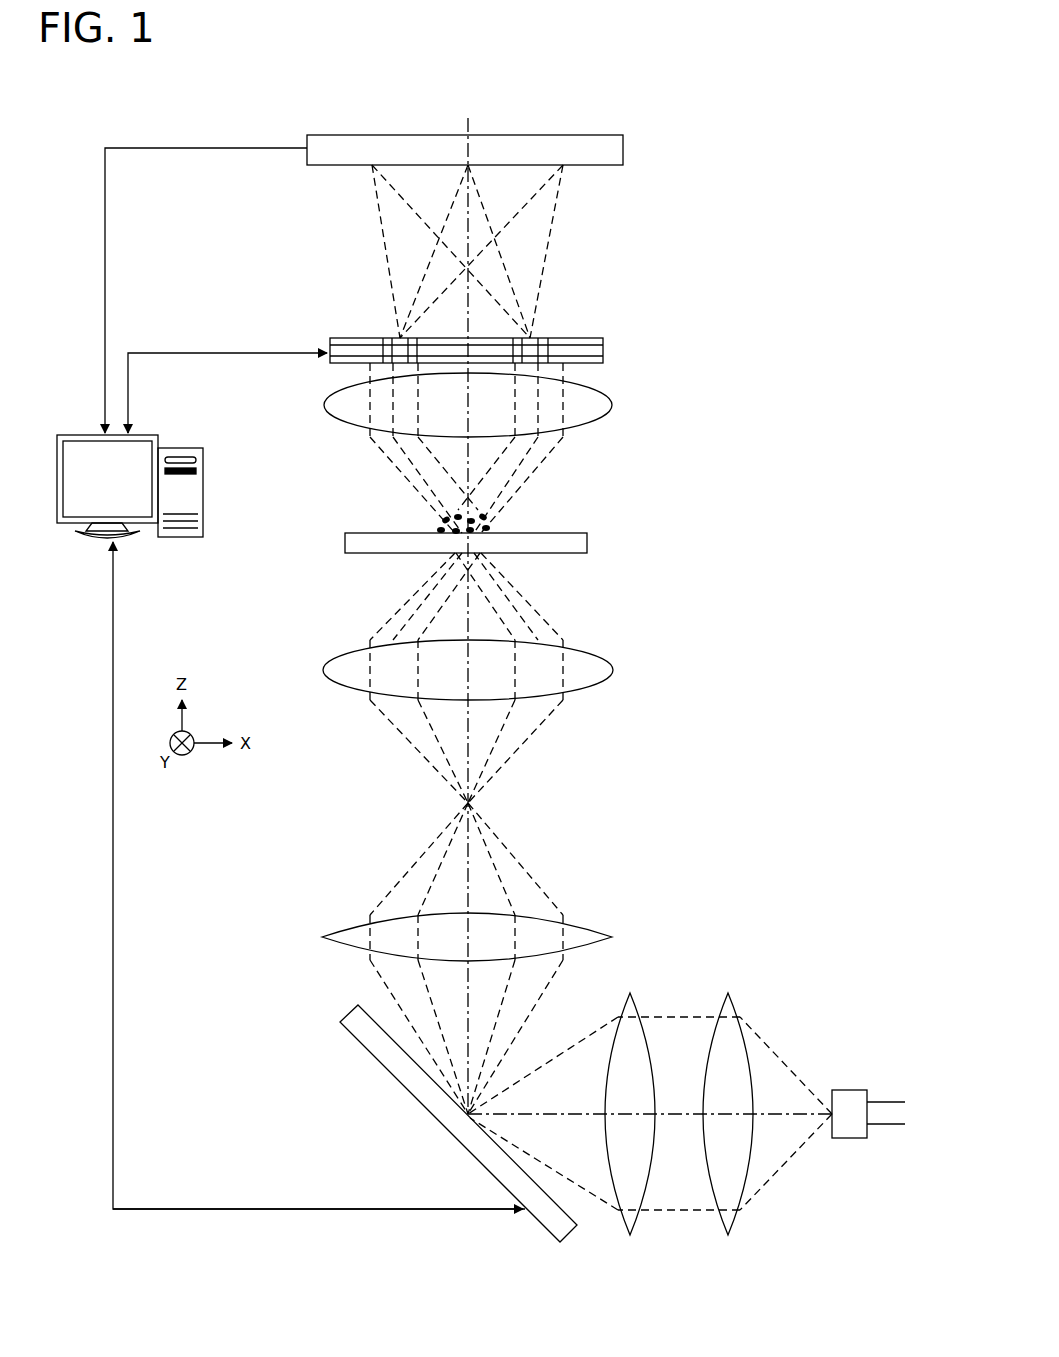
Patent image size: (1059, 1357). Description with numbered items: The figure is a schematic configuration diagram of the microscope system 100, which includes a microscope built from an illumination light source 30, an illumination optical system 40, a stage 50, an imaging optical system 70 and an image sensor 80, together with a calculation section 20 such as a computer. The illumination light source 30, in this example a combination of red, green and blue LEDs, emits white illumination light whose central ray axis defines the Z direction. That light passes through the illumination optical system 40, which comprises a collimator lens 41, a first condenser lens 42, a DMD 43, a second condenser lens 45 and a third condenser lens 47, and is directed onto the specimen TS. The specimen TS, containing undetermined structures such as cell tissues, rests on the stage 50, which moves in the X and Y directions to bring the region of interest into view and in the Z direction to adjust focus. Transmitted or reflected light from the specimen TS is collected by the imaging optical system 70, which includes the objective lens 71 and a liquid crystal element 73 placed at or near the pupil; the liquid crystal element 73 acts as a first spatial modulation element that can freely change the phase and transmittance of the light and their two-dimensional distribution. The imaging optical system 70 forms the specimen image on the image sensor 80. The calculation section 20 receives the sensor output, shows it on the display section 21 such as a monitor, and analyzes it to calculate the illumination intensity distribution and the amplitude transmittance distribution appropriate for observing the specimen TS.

The microscope system 100 is at (232, 107).
The image sensor 80 is at (501, 129).
The imaging optical system 70 is at (533, 373).
The liquid crystal element 73 is at (515, 332).
The objective lens 71 is at (512, 406).
The specimen TS is at (480, 523).
The stage 50 is at (432, 536).
The illumination optical system 40 is at (528, 947).
The third condenser lens 47 is at (612, 668).
The second condenser lens 45 is at (612, 937).
The DMD (Digital Micromirror Device) 43 is at (458, 1123).
The first condenser lens 42 is at (655, 1129).
The collimator lens 41 is at (753, 1129).
The illumination light source 30 is at (875, 1149).
The display section 21 is at (97, 519).
The calculation section 20 is at (161, 525).